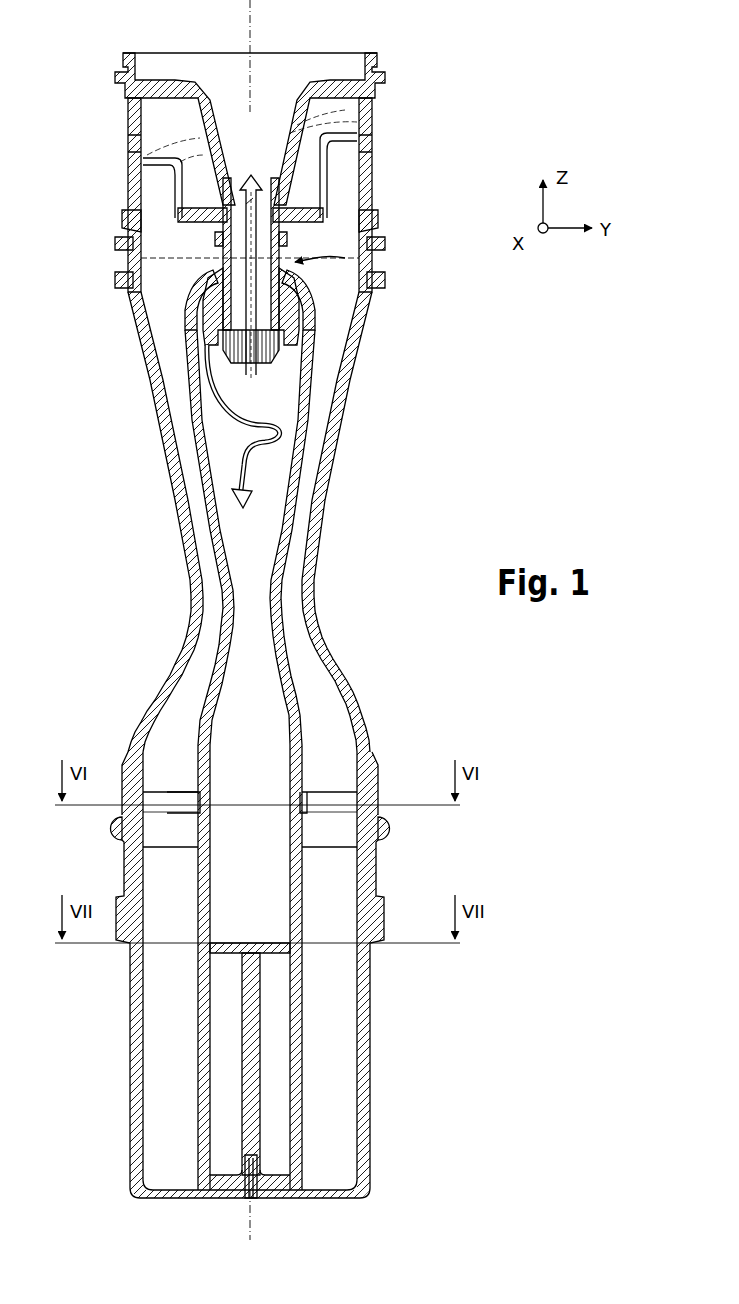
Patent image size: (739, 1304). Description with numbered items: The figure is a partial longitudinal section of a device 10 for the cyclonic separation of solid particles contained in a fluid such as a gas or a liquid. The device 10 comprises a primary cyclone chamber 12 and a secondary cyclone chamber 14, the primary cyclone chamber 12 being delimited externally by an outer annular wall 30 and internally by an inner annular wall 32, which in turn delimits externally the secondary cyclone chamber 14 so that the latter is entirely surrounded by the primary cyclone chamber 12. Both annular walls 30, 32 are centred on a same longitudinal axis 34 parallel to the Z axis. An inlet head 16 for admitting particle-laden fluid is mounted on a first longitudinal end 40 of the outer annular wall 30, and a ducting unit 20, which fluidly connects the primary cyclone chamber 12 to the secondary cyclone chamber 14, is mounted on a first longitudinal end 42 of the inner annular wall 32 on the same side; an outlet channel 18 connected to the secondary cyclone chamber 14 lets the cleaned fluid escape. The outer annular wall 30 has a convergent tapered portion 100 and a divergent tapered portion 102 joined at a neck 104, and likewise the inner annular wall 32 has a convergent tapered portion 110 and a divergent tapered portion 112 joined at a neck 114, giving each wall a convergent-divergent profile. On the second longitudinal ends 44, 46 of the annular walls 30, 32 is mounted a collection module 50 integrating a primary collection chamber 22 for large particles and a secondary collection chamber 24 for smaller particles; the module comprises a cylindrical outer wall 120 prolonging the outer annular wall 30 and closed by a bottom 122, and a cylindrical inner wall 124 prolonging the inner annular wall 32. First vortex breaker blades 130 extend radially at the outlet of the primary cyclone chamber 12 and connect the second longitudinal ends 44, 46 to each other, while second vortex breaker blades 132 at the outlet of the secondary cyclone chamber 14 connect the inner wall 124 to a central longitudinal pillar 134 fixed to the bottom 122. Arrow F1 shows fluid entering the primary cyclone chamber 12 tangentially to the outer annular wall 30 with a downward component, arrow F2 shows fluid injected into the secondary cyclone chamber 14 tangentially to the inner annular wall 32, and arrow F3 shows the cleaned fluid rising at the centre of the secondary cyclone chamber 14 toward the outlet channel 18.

The device 10 is at (418, 36).
The primary cyclone chamber 12 is at (313, 462).
The secondary cyclone chamber 14 is at (286, 562).
The inlet head 16 is at (383, 157).
The outlet channel 18 is at (292, 261).
The ducting unit 20 is at (323, 289).
The primary collection chamber 22 is at (330, 1093).
The secondary collection chamber 24 is at (277, 1140).
The outer annular wall 30 is at (152, 356).
The inner annular wall 32 is at (210, 493).
The longitudinal axis 34 is at (258, 3).
The first longitudinal end 40 is at (120, 243).
The first longitudinal end 42 is at (188, 346).
The second longitudinal end 44 is at (117, 835).
The second longitudinal end 46 is at (200, 818).
The collection module 50 is at (373, 1045).
The convergent tapered portion 100 is at (167, 452).
The divergent tapered portion 102 is at (178, 658).
The neck 104 is at (193, 613).
The convergent tapered portion 110 is at (303, 571).
The divergent tapered portion 112 is at (295, 690).
The neck 114 is at (282, 610).
The outer wall 120 is at (122, 1012).
The bottom 122 is at (167, 1200).
The inner wall 124 is at (205, 1110).
The first vortex breaker blades 130 is at (313, 790).
The second vortex breaker blades 132 is at (222, 955).
The central longitudinal pillar 134 is at (242, 1040).
The arrow F1 is at (160, 290).
The arrow F2 is at (258, 518).
The arrow F3 is at (253, 198).